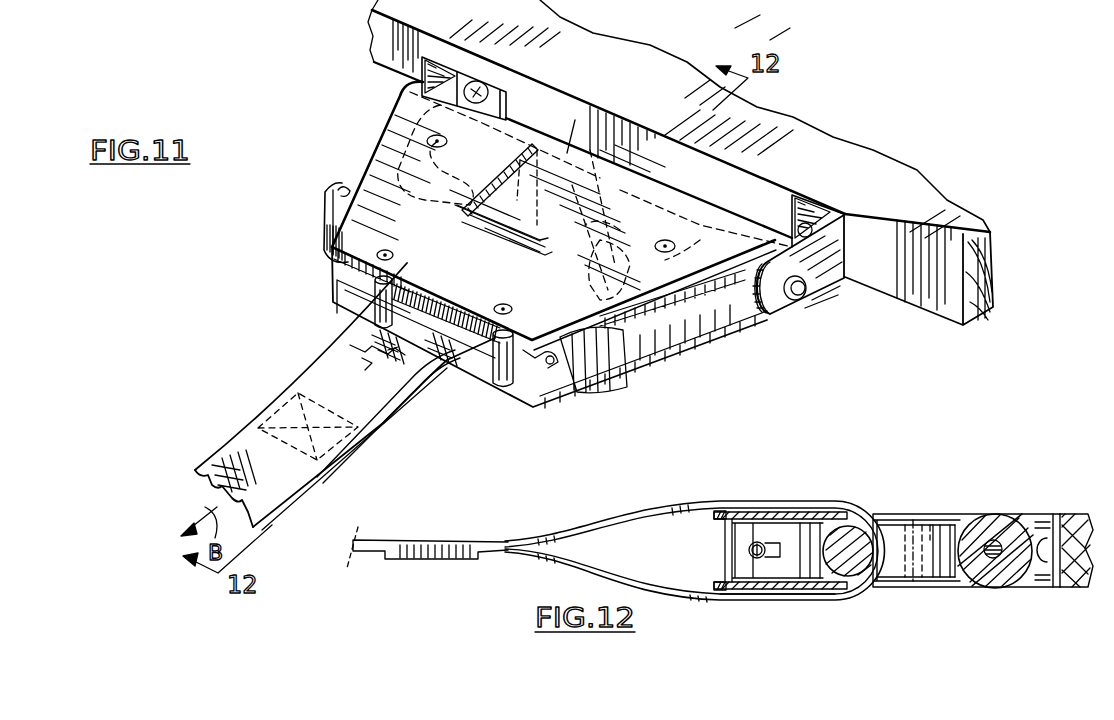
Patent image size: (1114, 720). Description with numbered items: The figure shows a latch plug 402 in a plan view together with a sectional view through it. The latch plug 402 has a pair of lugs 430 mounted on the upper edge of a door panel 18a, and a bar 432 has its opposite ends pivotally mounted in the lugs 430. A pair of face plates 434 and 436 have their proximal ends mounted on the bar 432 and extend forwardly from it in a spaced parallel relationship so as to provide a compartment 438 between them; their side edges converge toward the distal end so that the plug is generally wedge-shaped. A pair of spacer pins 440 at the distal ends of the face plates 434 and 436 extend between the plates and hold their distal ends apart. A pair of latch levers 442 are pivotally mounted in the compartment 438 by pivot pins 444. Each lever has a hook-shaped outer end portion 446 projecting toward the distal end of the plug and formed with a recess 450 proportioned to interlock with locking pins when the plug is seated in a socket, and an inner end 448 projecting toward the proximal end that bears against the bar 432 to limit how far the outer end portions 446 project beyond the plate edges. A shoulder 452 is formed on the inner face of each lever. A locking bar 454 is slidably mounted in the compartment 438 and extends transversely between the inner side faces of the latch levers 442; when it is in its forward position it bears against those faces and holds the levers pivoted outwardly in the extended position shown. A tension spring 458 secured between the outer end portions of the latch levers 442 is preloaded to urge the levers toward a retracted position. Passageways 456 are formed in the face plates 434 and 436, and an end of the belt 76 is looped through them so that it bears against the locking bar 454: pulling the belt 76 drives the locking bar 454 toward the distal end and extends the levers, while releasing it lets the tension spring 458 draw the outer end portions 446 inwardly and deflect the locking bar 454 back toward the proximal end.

In FIG. 11, the latch plug 402 is at (296, 116).
In FIG. 11, the door panel 18a is at (862, 156).
In FIG. 12, the door panel 18a is at (1077, 517).
In FIG. 11, the lugs 430 is at (405, 84).
In FIG. 12, the lugs 430 is at (1037, 520).
In FIG. 11, the bar 432 is at (567, 153).
In FIG. 12, the bar 432 is at (1030, 586).
In FIG. 11, the face plate 434 is at (332, 213).
In FIG. 12, the face plate 434 is at (762, 511).
In FIG. 11, the face plate 436 is at (345, 322).
In FIG. 12, the face plate 436 is at (738, 592).
In FIG. 11, the compartment 438 is at (350, 353).
In FIG. 11, the spacer pins 440 is at (378, 308).
In FIG. 12, the spacer pins 440 is at (720, 560).
In FIG. 11, the latch levers 442 is at (318, 234).
In FIG. 12, the latch levers 442 is at (891, 567).
In FIG. 11, the pivot pins 444 is at (436, 136).
In FIG. 12, the pivot pins 444 is at (932, 517).
In FIG. 11, the outer end portion 446 is at (328, 247).
In FIG. 12, the outer end portion 446 is at (718, 598).
In FIG. 11, the inner end 448 is at (408, 91).
In FIG. 12, the inner end 448 is at (972, 584).
In FIG. 11, the recess 450 is at (342, 192).
In FIG. 11, the shoulder 452 is at (372, 155).
In FIG. 12, the shoulder 452 is at (831, 582).
In FIG. 11, the locking bar 454 is at (599, 215).
In FIG. 12, the locking bar 454 is at (870, 520).
In FIG. 11, the passageways 456 is at (537, 225).
In FIG. 12, the passageways 456 is at (943, 517).
In FIG. 11, the tension spring 458 is at (458, 352).
In FIG. 12, the tension spring 458 is at (770, 540).
In FIG. 11, the belt 76 is at (237, 442).
In FIG. 12, the belt 76 is at (596, 524).